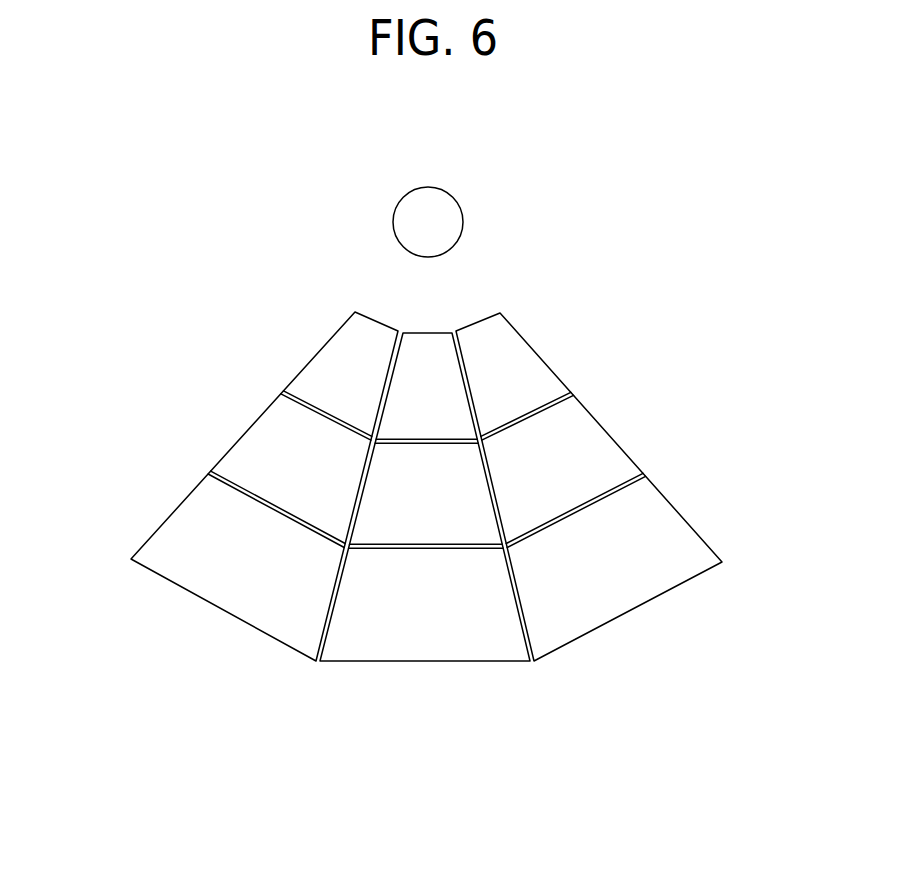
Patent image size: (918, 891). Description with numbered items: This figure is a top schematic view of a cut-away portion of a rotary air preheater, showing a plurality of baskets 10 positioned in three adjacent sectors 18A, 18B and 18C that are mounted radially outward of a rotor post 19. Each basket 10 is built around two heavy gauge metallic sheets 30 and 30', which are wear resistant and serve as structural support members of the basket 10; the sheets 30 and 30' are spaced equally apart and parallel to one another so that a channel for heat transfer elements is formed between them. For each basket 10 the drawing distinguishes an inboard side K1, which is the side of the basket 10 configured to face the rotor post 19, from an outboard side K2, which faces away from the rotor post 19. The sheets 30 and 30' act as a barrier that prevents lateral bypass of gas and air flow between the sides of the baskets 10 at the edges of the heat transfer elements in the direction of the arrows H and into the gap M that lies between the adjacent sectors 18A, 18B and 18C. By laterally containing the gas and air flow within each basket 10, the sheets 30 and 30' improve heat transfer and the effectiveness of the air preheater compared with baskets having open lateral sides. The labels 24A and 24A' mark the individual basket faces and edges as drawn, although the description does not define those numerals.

The rotor post 19 is at (443, 207).
The sector 18A is at (289, 700).
The sector 18B is at (310, 712).
The sector 18C is at (734, 605).
The tile 24A is at (452, 494).
The tile side edge 24A' is at (435, 422).
The basket 10 is at (428, 339).
The sheet 30 is at (340, 474).
The sheet 30' is at (507, 495).
The arrows H is at (378, 368).
The inboard side K1 is at (476, 318).
The outboard side K2 is at (155, 588).
The gap M is at (308, 672).